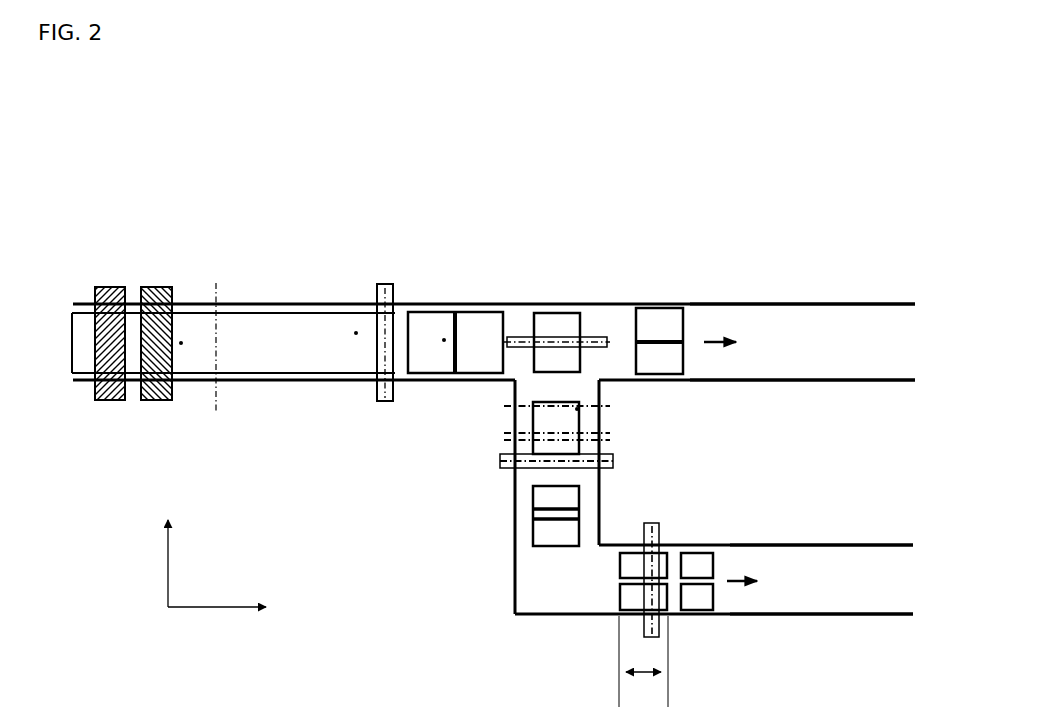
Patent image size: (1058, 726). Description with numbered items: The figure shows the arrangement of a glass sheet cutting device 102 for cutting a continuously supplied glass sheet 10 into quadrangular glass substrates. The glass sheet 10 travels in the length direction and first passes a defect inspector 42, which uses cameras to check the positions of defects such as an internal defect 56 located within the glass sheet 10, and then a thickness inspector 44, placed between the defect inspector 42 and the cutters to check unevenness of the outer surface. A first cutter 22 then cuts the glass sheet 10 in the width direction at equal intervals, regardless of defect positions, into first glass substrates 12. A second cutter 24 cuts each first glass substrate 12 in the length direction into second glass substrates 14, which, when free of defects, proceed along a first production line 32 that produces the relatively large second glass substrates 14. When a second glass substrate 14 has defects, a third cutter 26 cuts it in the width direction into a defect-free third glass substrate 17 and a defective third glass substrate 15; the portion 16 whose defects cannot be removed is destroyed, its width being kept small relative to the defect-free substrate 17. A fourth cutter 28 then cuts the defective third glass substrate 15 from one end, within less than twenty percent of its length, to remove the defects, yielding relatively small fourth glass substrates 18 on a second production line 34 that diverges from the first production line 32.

The glass sheet cutting device 102 is at (494, 437).
The glass sheet 10 is at (260, 318).
The defect 56 is at (265, 360).
The defect inspector 42 is at (112, 276).
The thickness inspector 44 is at (161, 276).
The first cutter 22 is at (389, 274).
The first glass substrate 12 is at (485, 314).
The second cutter 24 is at (595, 326).
The second glass substrate 14 is at (662, 306).
The first production line 32 is at (868, 316).
The third cutter 26 is at (622, 460).
The third glass substrate having no defects 17 is at (572, 530).
The third glass substrate having defects 15 is at (540, 494).
The defective glass substrate 16 is at (540, 515).
The fourth cutter 28 is at (658, 519).
The fourth glass substrate 18 is at (702, 552).
The second production line 34 is at (852, 556).